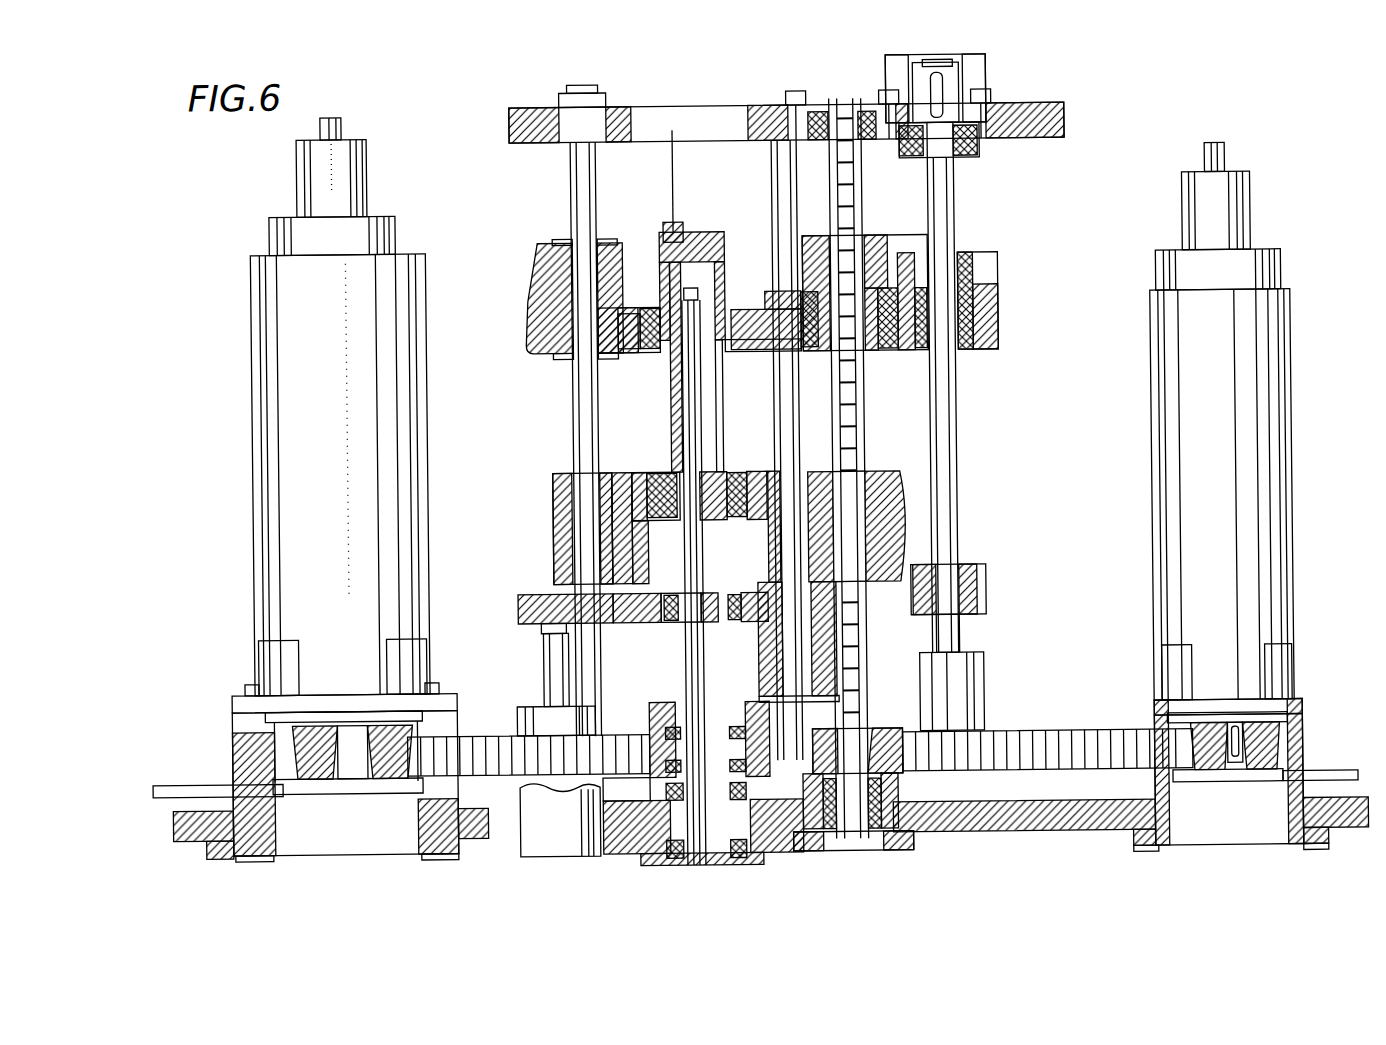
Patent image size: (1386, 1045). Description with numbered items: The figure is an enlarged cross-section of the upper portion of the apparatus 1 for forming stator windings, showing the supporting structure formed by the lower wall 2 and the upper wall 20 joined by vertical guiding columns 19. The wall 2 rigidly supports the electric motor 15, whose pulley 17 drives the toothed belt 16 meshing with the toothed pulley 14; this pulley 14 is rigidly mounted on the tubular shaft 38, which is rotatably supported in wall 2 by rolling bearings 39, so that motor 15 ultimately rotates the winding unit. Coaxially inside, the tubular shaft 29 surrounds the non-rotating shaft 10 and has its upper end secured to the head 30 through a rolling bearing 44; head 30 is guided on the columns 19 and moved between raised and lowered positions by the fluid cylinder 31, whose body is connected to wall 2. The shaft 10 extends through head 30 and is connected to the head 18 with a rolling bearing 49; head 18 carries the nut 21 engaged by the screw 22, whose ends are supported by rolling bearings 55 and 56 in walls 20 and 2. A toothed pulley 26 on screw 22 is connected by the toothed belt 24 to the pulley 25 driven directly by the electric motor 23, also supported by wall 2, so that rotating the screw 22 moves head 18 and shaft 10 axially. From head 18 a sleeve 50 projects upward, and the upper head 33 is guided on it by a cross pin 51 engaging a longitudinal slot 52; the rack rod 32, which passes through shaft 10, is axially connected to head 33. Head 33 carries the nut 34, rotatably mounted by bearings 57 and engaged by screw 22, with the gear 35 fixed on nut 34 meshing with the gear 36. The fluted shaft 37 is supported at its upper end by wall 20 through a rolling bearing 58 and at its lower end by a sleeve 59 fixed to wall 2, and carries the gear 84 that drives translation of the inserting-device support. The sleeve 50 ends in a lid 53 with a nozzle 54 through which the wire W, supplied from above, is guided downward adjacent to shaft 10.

The apparatus 1 is at (316, 406).
The wall 2 is at (1350, 804).
The shaft 10 is at (706, 555).
The pulley 14 is at (650, 745).
The electric motor 15 is at (290, 387).
The toothed belt 16 is at (485, 734).
The pulley 17 is at (296, 762).
The head 18 is at (553, 472).
The guiding columns 19 is at (582, 372).
The upper wall 20 is at (1068, 128).
The nut portion 21 is at (895, 568).
The screw 22 is at (868, 628).
The electric motor 23 is at (1185, 453).
The toothed belt 24 is at (1098, 735).
The pulley 25 is at (1268, 725).
The toothed pulley 26 is at (883, 730).
The tubular shaft 29 is at (690, 828).
The head 30 is at (520, 600).
The fluid cylinder 31 is at (540, 718).
The rack rod 32 is at (697, 432).
The head 33 is at (530, 322).
The nut 34 is at (845, 375).
The gear 35 is at (880, 245).
The gear 36 is at (978, 255).
The fluted shaft 37 is at (958, 200).
The tubular shaft 38 is at (743, 720).
The rolling bearings 39 is at (690, 790).
The rolling bearing 44 is at (668, 598).
The rolling bearing 49 is at (662, 478).
The sleeve 50 is at (672, 388).
The cross pin 51 is at (740, 345).
The longitudinal slot 52 is at (730, 470).
The lid 53 is at (712, 232).
The nozzle 54 is at (666, 232).
The rolling bearing 55 is at (855, 115).
The rolling bearing 56 is at (900, 830).
The bearings 57 is at (885, 345).
The rolling bearing 58 is at (985, 155).
The sleeve 59 is at (975, 672).
The gear 84 is at (985, 580).
The wire W is at (678, 148).